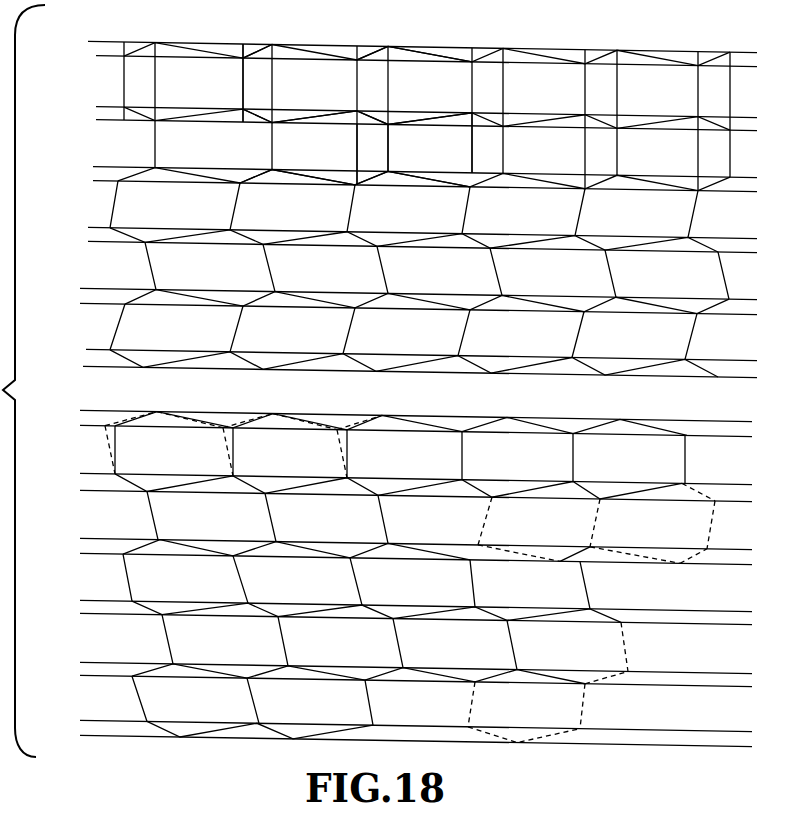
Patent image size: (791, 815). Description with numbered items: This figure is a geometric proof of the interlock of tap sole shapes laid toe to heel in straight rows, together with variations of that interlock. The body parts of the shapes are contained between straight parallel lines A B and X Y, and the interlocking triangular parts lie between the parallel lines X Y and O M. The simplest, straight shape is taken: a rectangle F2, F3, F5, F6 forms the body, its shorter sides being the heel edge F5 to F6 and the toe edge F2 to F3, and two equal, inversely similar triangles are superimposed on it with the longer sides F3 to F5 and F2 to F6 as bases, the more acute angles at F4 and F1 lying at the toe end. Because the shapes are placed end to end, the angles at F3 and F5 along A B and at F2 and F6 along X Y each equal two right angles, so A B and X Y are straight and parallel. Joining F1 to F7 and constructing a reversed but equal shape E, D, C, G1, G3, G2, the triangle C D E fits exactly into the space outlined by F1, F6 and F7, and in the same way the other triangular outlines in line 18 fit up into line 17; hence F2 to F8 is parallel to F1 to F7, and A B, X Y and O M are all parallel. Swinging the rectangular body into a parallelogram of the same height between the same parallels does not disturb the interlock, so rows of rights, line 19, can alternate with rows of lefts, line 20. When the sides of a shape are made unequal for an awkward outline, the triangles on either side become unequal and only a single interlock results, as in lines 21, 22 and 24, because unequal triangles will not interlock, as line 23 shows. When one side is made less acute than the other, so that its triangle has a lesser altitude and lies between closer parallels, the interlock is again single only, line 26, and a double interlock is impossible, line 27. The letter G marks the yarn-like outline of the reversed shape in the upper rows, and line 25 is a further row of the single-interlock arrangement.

The line 17 is at (407, 116).
The line 18 is at (393, 109).
The line 19 is at (402, 202).
The line 20 is at (407, 263).
The line 21 is at (391, 447).
The line 22 is at (391, 511).
The line 23 is at (553, 530).
The line 24 is at (391, 575).
The line 25 of knitted loops 25 is at (394, 637).
The line 26 is at (394, 697).
The line 27 is at (416, 710).
The point A is at (380, 57).
The point B is at (731, 71).
The point X is at (380, 196).
The point O is at (382, 211).
The point Y is at (731, 203).
The point M is at (733, 219).
The point C is at (267, 155).
The point D is at (355, 111).
The point E is at (388, 118).
The point F1 is at (272, 116).
The point F2 is at (257, 102).
The point F3 is at (254, 83).
The point F4 is at (271, 39).
The point F5 is at (357, 56).
The point F6 is at (357, 106).
The point F7 is at (387, 116).
The point F8 is at (470, 112).
The yarn G is at (421, 31).
The point G1 is at (292, 155).
The point G2 is at (387, 164).
The point G3 is at (355, 179).